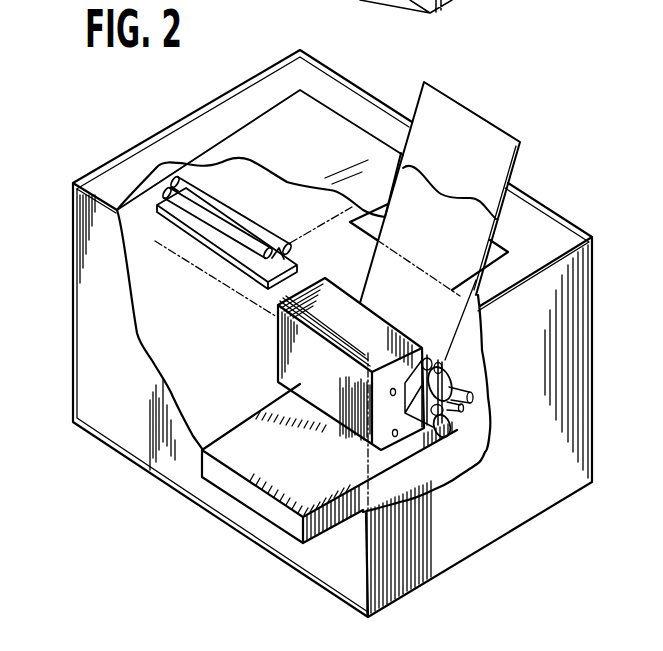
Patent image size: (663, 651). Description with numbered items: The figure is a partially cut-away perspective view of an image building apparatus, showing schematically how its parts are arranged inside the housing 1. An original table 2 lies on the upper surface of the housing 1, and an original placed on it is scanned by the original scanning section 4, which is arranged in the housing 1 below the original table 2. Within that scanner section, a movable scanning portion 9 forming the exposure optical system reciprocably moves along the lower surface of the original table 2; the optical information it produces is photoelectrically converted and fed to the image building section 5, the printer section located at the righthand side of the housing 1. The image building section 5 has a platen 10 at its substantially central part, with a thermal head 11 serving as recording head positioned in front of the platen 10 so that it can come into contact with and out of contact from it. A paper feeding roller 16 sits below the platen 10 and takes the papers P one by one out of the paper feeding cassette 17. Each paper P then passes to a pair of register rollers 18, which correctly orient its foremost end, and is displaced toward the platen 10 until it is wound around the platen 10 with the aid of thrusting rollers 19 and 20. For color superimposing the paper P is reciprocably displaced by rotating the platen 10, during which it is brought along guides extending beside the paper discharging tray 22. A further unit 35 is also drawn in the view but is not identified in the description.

The housing 1 is at (583, 297).
The original table 2 is at (250, 130).
The original scanning section 4 is at (232, 261).
The image building section 5 is at (467, 440).
The movable scanning portion 9 is at (212, 229).
The platen 10 is at (452, 378).
The thermal head 11 is at (420, 367).
The paper feeding roller 16 is at (444, 434).
The paper feeding cassette 17 is at (257, 513).
The register rollers 18 is at (474, 401).
The thrusting roller 19 is at (446, 408).
The thrusting roller 20 is at (448, 362).
The paper discharging tray 22 is at (488, 132).
The printer unit 35 is at (360, 275).
The paper P is at (436, 196).